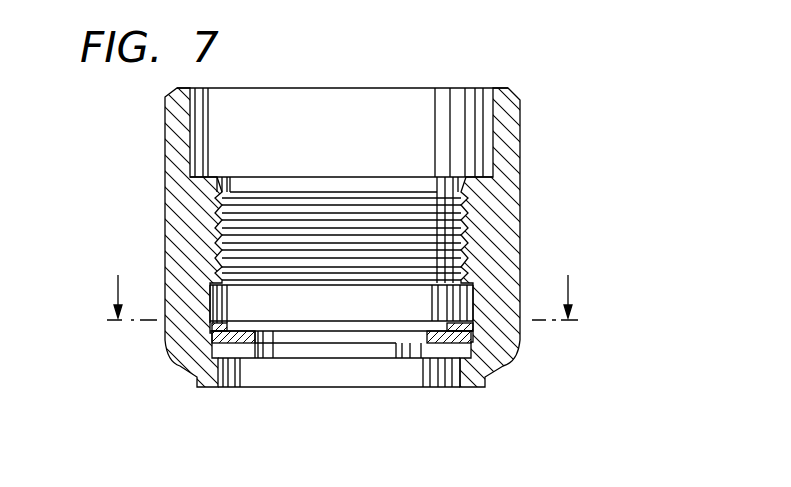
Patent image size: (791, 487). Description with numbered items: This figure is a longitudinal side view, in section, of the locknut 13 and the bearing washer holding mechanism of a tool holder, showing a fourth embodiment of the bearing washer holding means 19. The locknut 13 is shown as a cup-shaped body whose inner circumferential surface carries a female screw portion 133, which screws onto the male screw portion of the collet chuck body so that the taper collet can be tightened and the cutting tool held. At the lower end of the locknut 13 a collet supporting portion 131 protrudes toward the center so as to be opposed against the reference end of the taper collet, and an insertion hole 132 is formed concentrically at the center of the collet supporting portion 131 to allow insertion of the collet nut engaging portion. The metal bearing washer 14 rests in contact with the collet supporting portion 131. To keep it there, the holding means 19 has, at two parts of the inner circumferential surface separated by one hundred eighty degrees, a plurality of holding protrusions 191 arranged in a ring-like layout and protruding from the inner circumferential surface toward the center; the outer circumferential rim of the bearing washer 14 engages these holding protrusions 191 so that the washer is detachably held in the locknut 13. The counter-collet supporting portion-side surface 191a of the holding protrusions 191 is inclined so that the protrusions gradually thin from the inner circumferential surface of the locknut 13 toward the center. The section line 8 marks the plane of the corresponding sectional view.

The locknut 13 is at (520, 130).
The female screw portion 133 is at (478, 219).
The bearing washer 14 is at (440, 350).
The holding means 19 is at (476, 328).
The holding protrusions 191 is at (480, 332).
The counter-collet supporting portion-side surface 191a is at (210, 328).
The collet supporting portion 131 is at (243, 352).
The insertion hole 132 is at (258, 355).
The section line VIII-VIII 8 is at (345, 297).